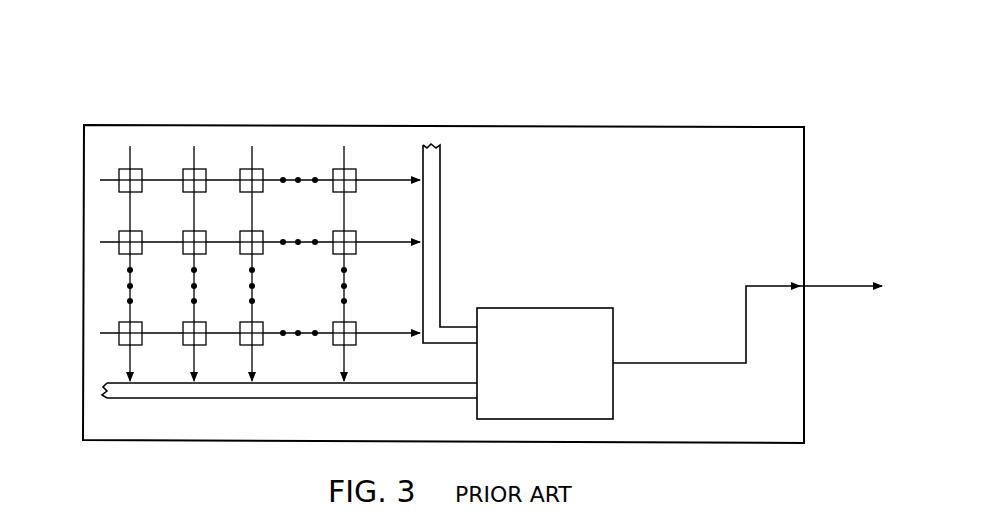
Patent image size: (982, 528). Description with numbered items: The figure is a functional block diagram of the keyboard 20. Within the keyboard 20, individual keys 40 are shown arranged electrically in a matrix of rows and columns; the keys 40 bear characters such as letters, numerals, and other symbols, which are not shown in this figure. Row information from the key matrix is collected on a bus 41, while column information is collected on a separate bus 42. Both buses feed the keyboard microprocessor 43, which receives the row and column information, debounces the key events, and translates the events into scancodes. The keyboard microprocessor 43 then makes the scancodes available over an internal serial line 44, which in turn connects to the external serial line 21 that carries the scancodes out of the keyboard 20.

The keyboard 20 is at (516, 126).
The external serial line 21 is at (827, 283).
The keys 40 is at (248, 167).
The bus 41 is at (440, 191).
The bus 42 is at (262, 400).
The keyboard microprocessor 43 is at (538, 307).
The internal serial line 44 is at (666, 363).